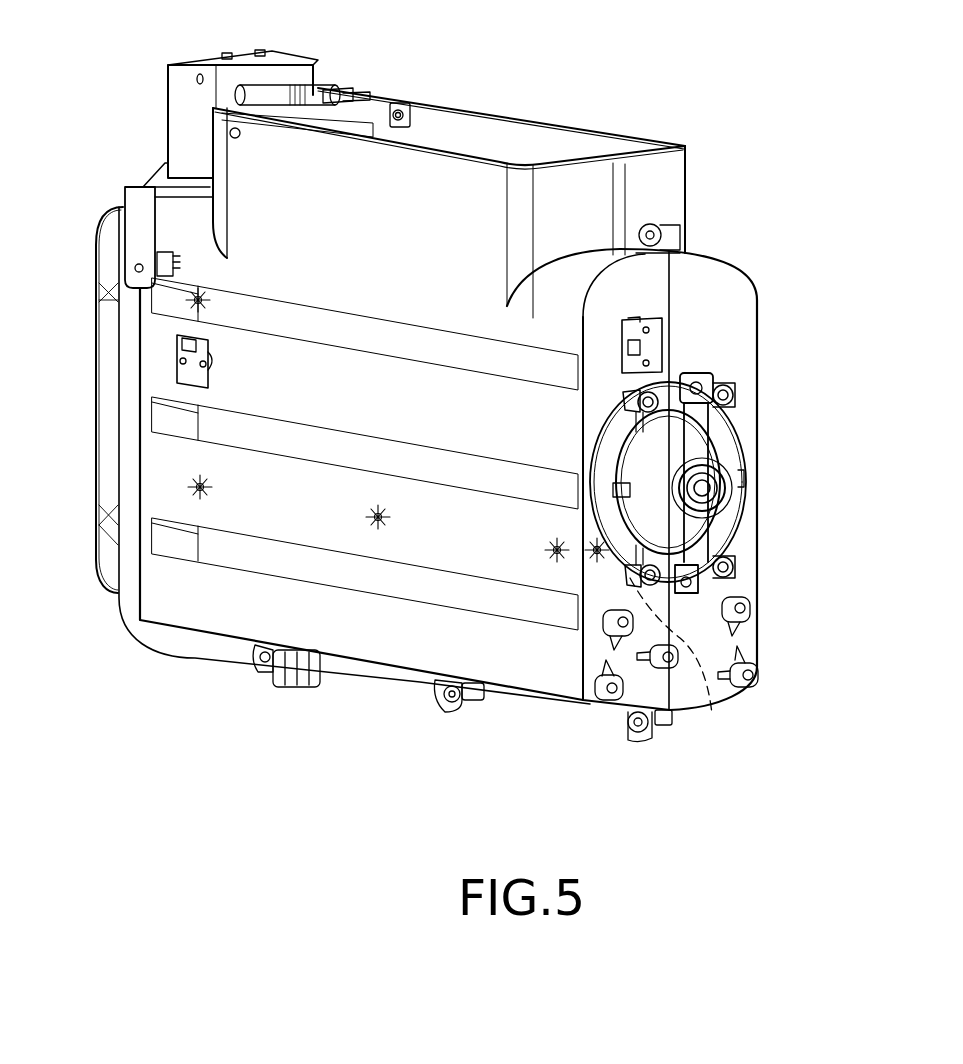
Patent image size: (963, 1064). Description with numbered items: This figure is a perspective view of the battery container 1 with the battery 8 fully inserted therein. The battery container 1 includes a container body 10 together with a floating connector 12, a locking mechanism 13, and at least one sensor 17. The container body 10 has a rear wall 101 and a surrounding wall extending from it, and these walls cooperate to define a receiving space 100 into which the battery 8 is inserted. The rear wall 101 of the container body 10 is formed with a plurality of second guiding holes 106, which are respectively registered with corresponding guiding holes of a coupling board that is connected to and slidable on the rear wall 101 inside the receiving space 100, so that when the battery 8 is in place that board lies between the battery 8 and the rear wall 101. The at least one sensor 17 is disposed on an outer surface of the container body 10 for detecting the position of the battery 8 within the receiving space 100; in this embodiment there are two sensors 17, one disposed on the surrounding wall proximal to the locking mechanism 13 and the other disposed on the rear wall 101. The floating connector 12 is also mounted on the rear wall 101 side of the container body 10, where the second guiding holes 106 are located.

The battery container 1 is at (712, 136).
The battery 8 is at (108, 405).
The container body 10 is at (576, 97).
The receiving space 100 is at (463, 108).
The rear wall 101 is at (740, 318).
The floating connector 12 is at (727, 421).
The locking mechanism 13 is at (178, 113).
The sensor 17 is at (182, 348).
The second guiding holes 106 is at (740, 541).